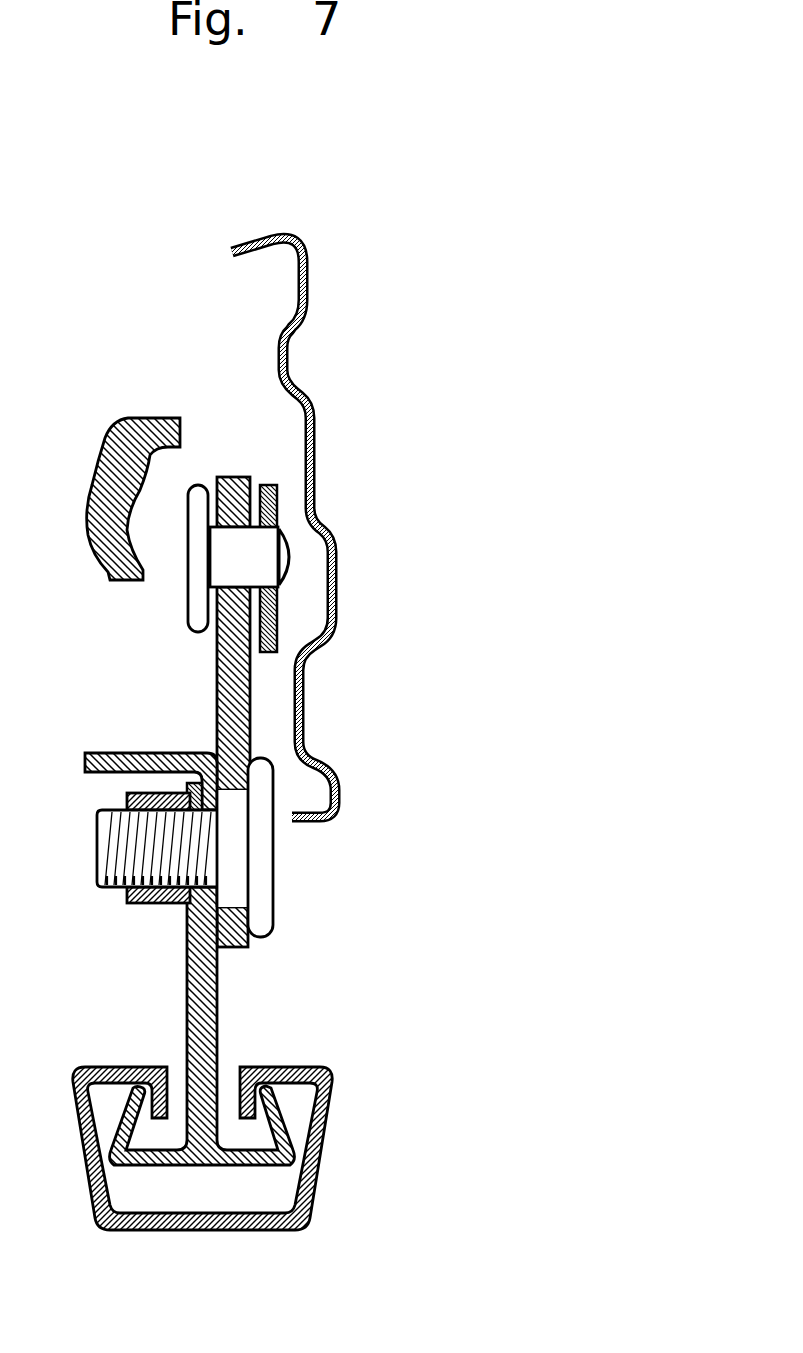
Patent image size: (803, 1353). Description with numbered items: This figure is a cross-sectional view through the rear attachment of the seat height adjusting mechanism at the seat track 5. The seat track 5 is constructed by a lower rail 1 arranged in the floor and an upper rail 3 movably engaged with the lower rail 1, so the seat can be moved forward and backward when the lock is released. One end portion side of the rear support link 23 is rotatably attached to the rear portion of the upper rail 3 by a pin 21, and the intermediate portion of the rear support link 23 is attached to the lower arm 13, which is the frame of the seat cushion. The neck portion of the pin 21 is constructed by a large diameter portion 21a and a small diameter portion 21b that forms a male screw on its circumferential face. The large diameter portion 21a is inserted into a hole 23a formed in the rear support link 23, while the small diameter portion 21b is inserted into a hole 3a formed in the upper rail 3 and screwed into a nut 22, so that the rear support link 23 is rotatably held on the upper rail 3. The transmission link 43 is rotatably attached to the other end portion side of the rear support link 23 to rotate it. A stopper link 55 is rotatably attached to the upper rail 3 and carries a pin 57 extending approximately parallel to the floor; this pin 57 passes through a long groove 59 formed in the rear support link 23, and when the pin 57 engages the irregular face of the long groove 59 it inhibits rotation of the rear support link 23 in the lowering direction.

The lower rail 1 is at (327, 1140).
The upper rail 3 is at (277, 1165).
The hole 3a is at (190, 782).
The seat track 5 is at (390, 1192).
The lower arm 13 is at (310, 393).
The pin 21 is at (262, 882).
The large diameter portion 21a is at (233, 837).
The small diameter portion 21b is at (107, 887).
The nut 22 is at (123, 905).
The rear support link 23 is at (247, 698).
The hole 23a is at (240, 947).
The transmission link 43 is at (113, 438).
The stopper link 55 is at (277, 617).
The pin 57 is at (250, 562).
The long groove 59 is at (247, 527).